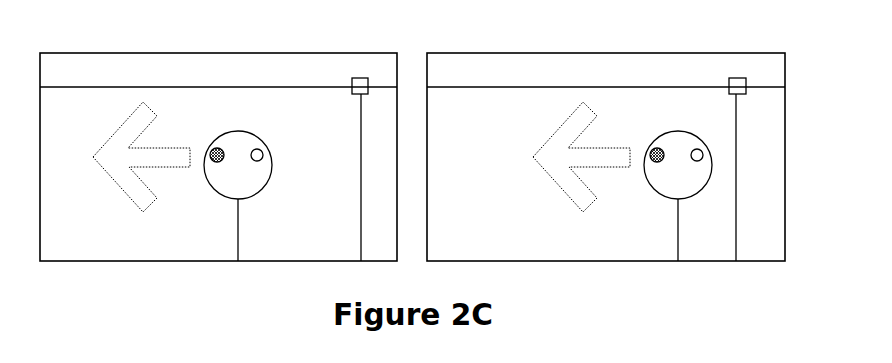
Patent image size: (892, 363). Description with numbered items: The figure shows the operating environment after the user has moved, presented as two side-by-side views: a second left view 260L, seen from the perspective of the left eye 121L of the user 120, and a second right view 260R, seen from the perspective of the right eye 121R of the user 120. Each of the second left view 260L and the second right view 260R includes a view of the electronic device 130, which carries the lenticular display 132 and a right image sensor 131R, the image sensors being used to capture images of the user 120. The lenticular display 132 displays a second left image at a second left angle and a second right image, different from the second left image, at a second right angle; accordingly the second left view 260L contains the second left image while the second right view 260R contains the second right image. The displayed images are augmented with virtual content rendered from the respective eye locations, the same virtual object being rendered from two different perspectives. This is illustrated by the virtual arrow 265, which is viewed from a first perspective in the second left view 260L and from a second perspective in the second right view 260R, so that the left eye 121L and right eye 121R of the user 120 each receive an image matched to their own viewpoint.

The second left view 260L is at (350, 53).
The second right view 260R is at (756, 53).
The electronic device 130 is at (166, 84).
The lenticular display 132 is at (312, 111).
The right image sensor 131R is at (360, 78).
The user 120 is at (215, 140).
The left eye 121L is at (211, 149).
The right eye 121R is at (263, 156).
The virtual arrow 265 is at (152, 208).